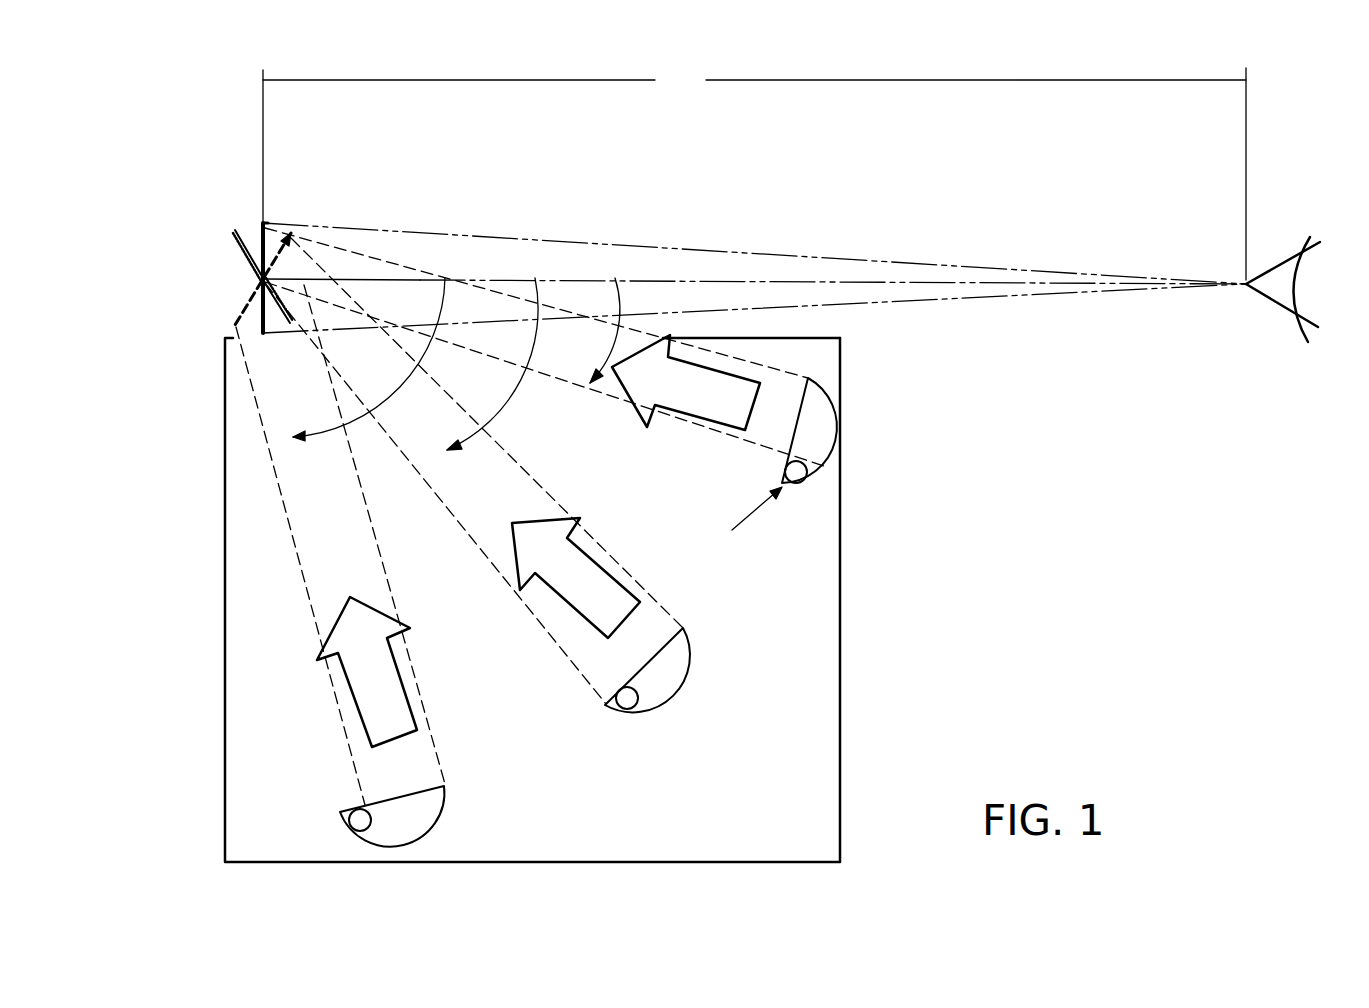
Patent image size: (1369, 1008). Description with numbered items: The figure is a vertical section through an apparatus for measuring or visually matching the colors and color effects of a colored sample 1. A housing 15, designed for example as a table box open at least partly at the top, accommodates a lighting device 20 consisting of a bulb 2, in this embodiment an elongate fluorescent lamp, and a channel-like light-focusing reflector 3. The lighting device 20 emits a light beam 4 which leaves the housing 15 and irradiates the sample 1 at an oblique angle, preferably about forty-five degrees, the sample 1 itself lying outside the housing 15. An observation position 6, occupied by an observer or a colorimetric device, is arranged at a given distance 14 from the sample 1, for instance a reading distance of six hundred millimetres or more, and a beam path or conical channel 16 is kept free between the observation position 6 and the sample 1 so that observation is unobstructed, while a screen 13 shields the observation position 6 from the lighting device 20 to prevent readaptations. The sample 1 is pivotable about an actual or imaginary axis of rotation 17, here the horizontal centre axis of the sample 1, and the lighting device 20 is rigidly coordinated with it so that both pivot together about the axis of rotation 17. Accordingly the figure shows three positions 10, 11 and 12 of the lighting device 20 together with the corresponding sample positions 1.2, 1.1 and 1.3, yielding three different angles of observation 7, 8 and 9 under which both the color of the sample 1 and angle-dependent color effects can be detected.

The sample 1 is at (240, 283).
The sample position 1.1 is at (266, 226).
The sample position 1.2 is at (237, 230).
The sample position 1.3 is at (293, 231).
The axis of rotation 17 is at (262, 277).
The bulb 2 is at (793, 483).
The light-focusing reflector 3 is at (825, 478).
The light beam 4 is at (538, 544).
The observation position 6 is at (1283, 307).
The angle of observation 7 is at (605, 342).
The angle of observation 8 is at (491, 379).
The angle of observation 9 is at (368, 376).
The lighting device position 10 is at (820, 438).
The lighting device position 11 is at (663, 678).
The lighting device position 12 is at (412, 820).
The screen 13 is at (800, 338).
The distance 14 is at (754, 173).
The housing 15 is at (841, 617).
The beam path 16 is at (780, 280).
The lighting device 20 is at (738, 523).